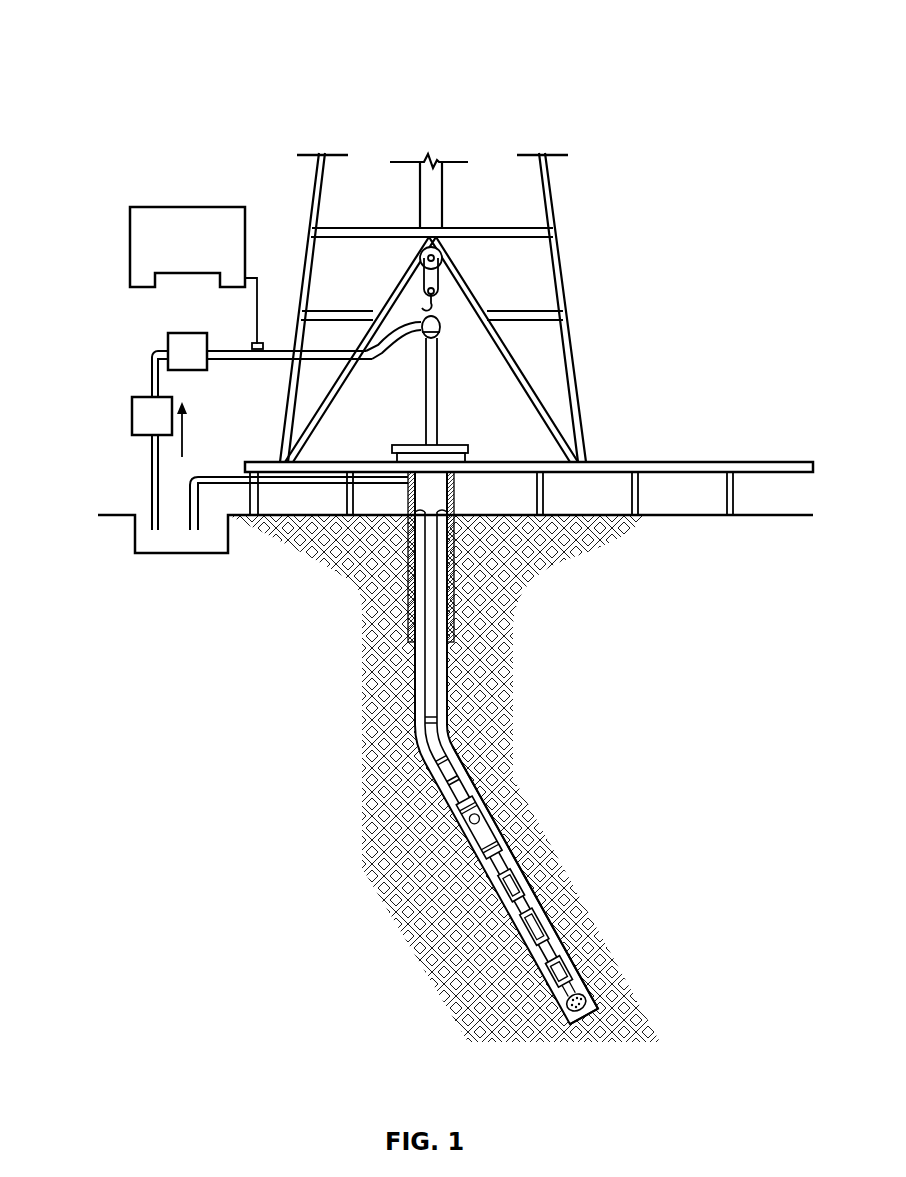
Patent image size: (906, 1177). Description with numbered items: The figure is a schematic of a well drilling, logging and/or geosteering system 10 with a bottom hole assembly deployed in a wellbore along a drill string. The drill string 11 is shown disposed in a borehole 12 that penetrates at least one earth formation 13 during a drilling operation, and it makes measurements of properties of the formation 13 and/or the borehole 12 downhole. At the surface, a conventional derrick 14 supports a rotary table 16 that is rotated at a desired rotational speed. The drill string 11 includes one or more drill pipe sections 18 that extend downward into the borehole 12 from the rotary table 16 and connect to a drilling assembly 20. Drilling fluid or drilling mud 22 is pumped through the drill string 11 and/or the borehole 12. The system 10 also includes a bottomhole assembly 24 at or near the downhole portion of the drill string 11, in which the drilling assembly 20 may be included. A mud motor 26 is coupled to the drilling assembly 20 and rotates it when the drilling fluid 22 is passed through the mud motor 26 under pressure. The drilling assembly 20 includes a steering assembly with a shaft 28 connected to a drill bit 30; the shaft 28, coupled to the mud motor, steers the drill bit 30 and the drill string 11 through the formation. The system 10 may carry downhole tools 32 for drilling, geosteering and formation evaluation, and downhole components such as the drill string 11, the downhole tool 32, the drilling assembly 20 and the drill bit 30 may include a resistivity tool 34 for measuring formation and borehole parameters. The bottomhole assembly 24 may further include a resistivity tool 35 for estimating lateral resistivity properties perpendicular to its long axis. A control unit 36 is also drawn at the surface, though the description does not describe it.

The well drilling, logging and/or geosteering system 10 is at (126, 46).
The drill string 11 is at (446, 636).
The borehole 12 is at (447, 734).
The earth formation 13 is at (330, 545).
The derrick 14 is at (579, 346).
The rotary table 16 is at (445, 444).
The drill pipe sections 18 is at (425, 657).
The drilling assembly 20 is at (556, 1008).
The drilling fluid 22 is at (154, 550).
The bottomhole assembly 24 is at (610, 878).
The mud motor 26 is at (452, 764).
The shaft 28 is at (560, 988).
The drill bit 30 is at (568, 1020).
The downhole tool 32 is at (514, 824).
The resistivity tool 34 is at (522, 898).
The resistivity tool 35 is at (503, 878).
The control unit 36 is at (163, 206).